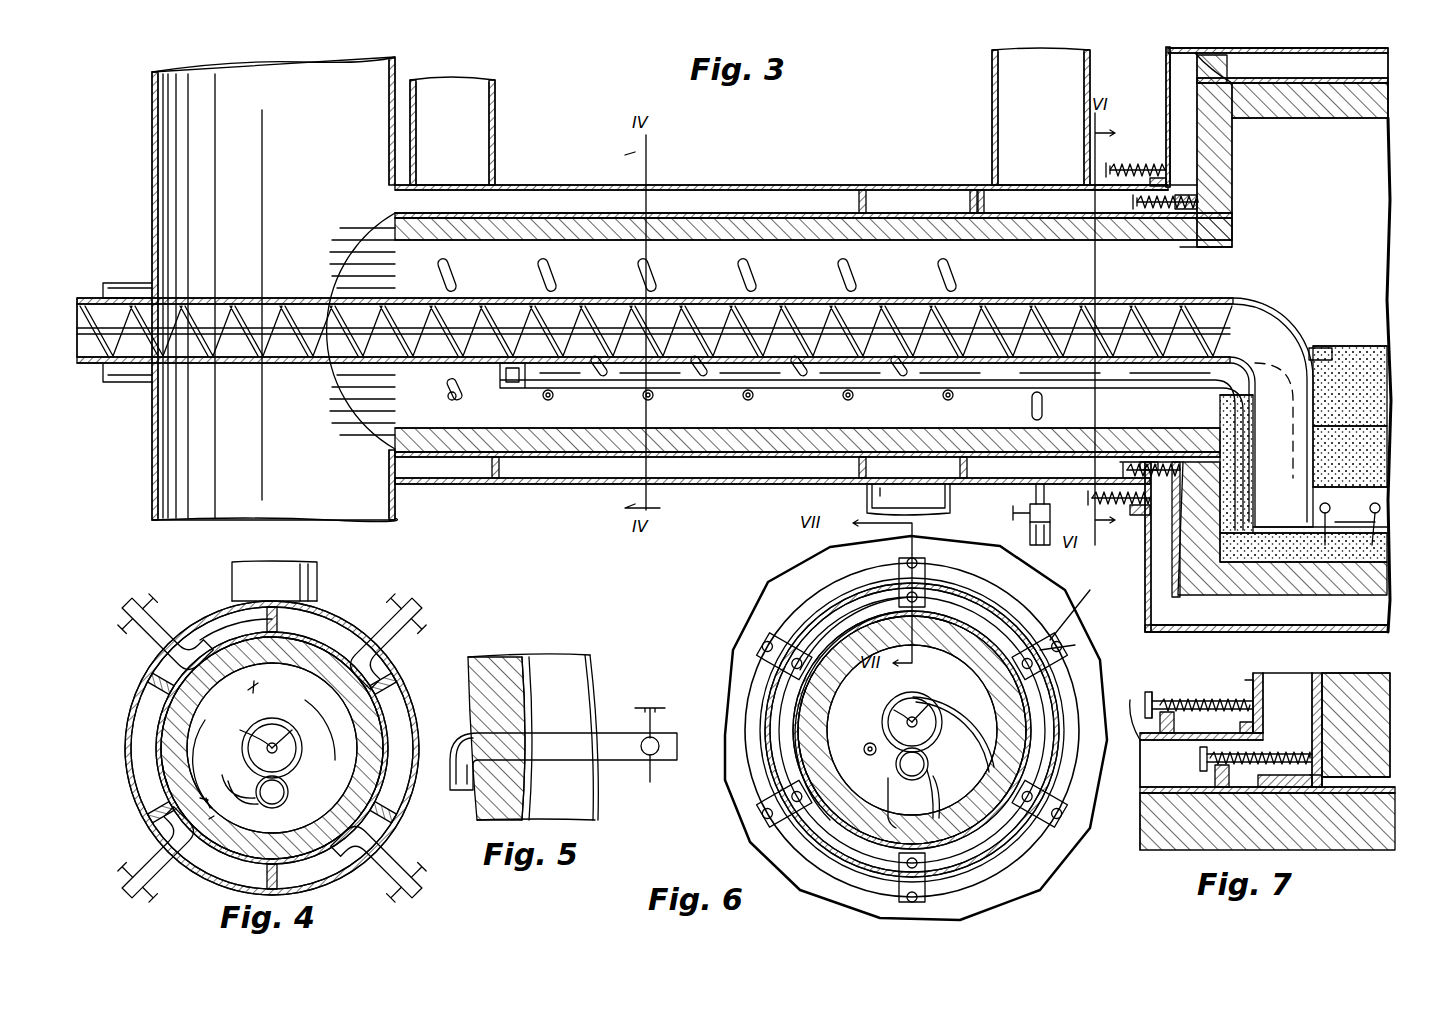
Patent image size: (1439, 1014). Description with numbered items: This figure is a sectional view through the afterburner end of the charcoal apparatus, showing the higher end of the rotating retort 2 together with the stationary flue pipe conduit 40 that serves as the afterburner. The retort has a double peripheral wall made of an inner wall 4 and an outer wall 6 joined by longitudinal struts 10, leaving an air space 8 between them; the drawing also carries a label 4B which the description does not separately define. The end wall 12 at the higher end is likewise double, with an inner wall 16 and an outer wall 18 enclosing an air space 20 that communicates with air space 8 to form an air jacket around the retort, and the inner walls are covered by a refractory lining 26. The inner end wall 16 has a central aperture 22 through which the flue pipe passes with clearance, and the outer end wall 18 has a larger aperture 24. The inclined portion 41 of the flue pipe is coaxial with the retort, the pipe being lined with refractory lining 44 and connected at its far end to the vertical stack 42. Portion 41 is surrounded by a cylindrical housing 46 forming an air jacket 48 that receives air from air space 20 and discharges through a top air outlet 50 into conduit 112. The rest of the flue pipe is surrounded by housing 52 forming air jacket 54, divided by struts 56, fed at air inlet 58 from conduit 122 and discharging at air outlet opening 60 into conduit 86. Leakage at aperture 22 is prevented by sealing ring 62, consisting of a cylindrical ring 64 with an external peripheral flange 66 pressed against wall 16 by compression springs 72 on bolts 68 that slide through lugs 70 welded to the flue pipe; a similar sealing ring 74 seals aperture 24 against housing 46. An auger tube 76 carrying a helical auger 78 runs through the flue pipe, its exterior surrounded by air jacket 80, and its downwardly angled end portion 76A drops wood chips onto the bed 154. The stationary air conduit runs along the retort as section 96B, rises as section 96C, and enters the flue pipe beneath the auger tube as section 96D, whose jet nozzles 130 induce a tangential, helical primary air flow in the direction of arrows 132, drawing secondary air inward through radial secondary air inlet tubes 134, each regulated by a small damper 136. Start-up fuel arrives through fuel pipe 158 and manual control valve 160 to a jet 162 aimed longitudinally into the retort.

In FIG. 3, the retort 2 is at (1338, 48).
In FIG. 6, the retort 2 is at (760, 593).
In FIG. 3, the inner wall 4 is at (1303, 78).
In FIG. 3, the casing flange 4B is at (1058, 200).
In FIG. 3, the outer wall 6 is at (1262, 48).
In FIG. 3, the air space 8 is at (1388, 62).
In FIG. 3, the struts 10 is at (1197, 52).
In FIG. 7, the struts 10 is at (1163, 630).
In FIG. 3, the end wall 12 is at (1160, 68).
In FIG. 6, the end wall 12 is at (1063, 622).
In FIG. 7, the end wall 12 is at (1243, 670).
In FIG. 3, the inner wall 16 is at (1232, 152).
In FIG. 7, the inner wall 16 is at (1318, 673).
In FIG. 3, the outer wall 18 is at (1166, 88).
In FIG. 6, the outer wall 18 is at (1078, 640).
In FIG. 7, the outer wall 18 is at (1258, 673).
In FIG. 3, the air space 20 is at (1215, 128).
In FIG. 7, the air space 20 is at (1300, 700).
In FIG. 3, the central circular aperture 22 is at (1200, 225).
In FIG. 7, the central circular aperture 22 is at (1295, 793).
In FIG. 3, the central circular aperture 24 is at (1185, 178).
In FIG. 7, the central circular aperture 24 is at (1270, 733).
In FIG. 3, the lining 26 is at (1375, 105).
In FIG. 7, the lining 26 is at (1366, 673).
In FIG. 3, the flue pipe conduit 40 is at (740, 210).
In FIG. 4, the flue pipe conduit 40 is at (158, 772).
In FIG. 5, the flue pipe conduit 40 is at (524, 657).
In FIG. 6, the flue pipe conduit 40 is at (795, 745).
In FIG. 7, the flue pipe conduit 40 is at (1140, 790).
In FIG. 3, the inclined portion of flue pipe 41 is at (978, 200).
In FIG. 6, the inclined portion of flue pipe 41 is at (810, 812).
In FIG. 7, the inclined portion of flue pipe 41 is at (1160, 800).
In FIG. 3, the vertical stack 42 is at (152, 150).
In FIG. 3, the lining 44 is at (596, 240).
In FIG. 4, the lining 44 is at (170, 800).
In FIG. 5, the lining 44 is at (488, 657).
In FIG. 6, the lining 44 is at (824, 688).
In FIG. 7, the lining 44 is at (1150, 832).
In FIG. 3, the cylindrical housing 46 is at (1005, 485).
In FIG. 6, the cylindrical housing 46 is at (790, 720).
In FIG. 7, the cylindrical housing 46 is at (1133, 738).
In FIG. 6, the air jacket 48 is at (790, 768).
In FIG. 7, the air jacket 48 is at (1155, 758).
In FIG. 3, the top air outlet 50 is at (1040, 185).
In FIG. 3, the cylindrical housing 52 is at (690, 185).
In FIG. 4, the cylindrical housing 52 is at (126, 743).
In FIG. 5, the cylindrical housing 52 is at (592, 700).
In FIG. 3, the air jacket 54 is at (796, 200).
In FIG. 4, the air jacket 54 is at (138, 712).
In FIG. 5, the air jacket 54 is at (558, 660).
In FIG. 3, the struts 56 is at (866, 210).
In FIG. 4, the struts 56 is at (158, 688).
In FIG. 3, the air inlet 58 is at (880, 488).
In FIG. 3, the air outlet opening 60 is at (470, 185).
In FIG. 4, the air outlet opening 60 is at (312, 603).
In FIG. 3, the sealing ring 62 is at (1170, 218).
In FIG. 6, the sealing ring 62 is at (798, 705).
In FIG. 7, the sealing ring 62 is at (1275, 787).
In FIG. 6, the cylindrical ring 64 is at (795, 690).
In FIG. 7, the cylindrical ring 64 is at (1230, 787).
In FIG. 6, the external peripheral flange 66 is at (800, 630).
In FIG. 7, the external peripheral flange 66 is at (1335, 793).
In FIG. 6, the bolts 68 is at (790, 648).
In FIG. 7, the bolts 68 is at (1170, 793).
In FIG. 6, the lug 70 is at (790, 665).
In FIG. 7, the lug 70 is at (1200, 787).
In FIG. 7, the compression spring 72 is at (1280, 750).
In FIG. 3, the sealing ring 74 is at (1158, 165).
In FIG. 6, the sealing ring 74 is at (808, 606).
In FIG. 7, the sealing ring 74 is at (1250, 688).
In FIG. 3, the auger tube 76 is at (95, 368).
In FIG. 4, the auger tube 76 is at (290, 725).
In FIG. 6, the auger tube 76 is at (912, 694).
In FIG. 3, the downwardly angled end portion 76A is at (1282, 495).
In FIG. 6, the downwardly angled end portion 76A is at (993, 725).
In FIG. 3, the helical auger 78 is at (262, 363).
In FIG. 4, the helical auger 78 is at (254, 727).
In FIG. 6, the helical auger 78 is at (891, 699).
In FIG. 3, the air jacket 80 is at (130, 282).
In FIG. 3, the conduit 86 is at (495, 106).
In FIG. 4, the conduit 86 is at (250, 575).
In FIG. 3, the air conduit section 96B is at (1350, 490).
In FIG. 3, the air conduit section 96C is at (1350, 386).
In FIG. 6, the air conduit section 96C is at (888, 806).
In FIG. 3, the air conduit section 96D is at (871, 446).
In FIG. 4, the air conduit section 96D is at (304, 789).
In FIG. 6, the air conduit section 96D is at (896, 765).
In FIG. 3, the conduit 112 is at (992, 76).
In FIG. 3, the conduit 122 is at (867, 502).
In FIG. 3, the jet nozzles 130 is at (598, 378).
In FIG. 4, the jet nozzles 130 is at (238, 810).
In FIG. 4, the arrows 132 is at (350, 752).
In FIG. 3, the secondary air inlet tubes 134 is at (845, 270).
In FIG. 4, the secondary air inlet tubes 134 is at (148, 640).
In FIG. 5, the secondary air inlet tubes 134 is at (615, 762).
In FIG. 4, the damper 136 is at (168, 612).
In FIG. 5, the damper 136 is at (651, 759).
In FIG. 3, the bed 154 is at (1360, 346).
In FIG. 3, the fuel pipe 158 is at (1040, 546).
In FIG. 3, the manual control valve 160 is at (1012, 515).
In FIG. 3, the jet 162 is at (1312, 340).
In FIG. 6, the jet 162 is at (870, 743).